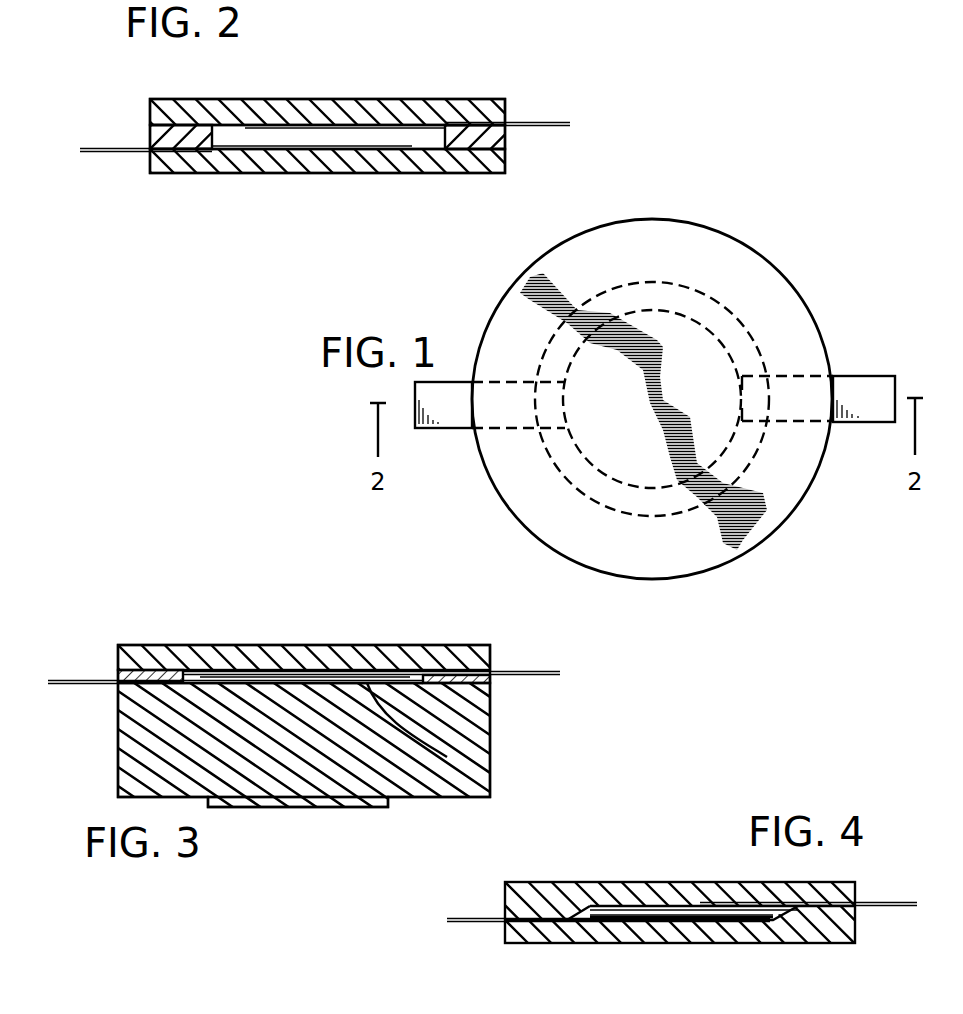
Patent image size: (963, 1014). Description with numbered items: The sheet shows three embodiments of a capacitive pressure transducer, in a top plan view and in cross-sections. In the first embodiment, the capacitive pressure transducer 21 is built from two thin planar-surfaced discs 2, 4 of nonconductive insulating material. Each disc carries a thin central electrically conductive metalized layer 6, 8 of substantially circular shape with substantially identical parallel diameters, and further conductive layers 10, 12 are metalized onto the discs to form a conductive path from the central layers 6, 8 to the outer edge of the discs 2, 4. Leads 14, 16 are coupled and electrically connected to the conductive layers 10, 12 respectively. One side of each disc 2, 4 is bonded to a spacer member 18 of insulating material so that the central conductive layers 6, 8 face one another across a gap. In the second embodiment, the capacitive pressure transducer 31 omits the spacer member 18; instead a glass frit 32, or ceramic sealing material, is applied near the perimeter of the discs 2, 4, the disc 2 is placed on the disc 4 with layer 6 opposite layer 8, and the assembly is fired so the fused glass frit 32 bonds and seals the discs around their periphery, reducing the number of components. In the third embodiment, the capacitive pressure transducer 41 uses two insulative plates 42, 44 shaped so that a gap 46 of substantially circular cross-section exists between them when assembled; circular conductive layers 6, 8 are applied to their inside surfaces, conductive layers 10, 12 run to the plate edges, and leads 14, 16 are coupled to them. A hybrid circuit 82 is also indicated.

In FIG. 2, the disc 2 is at (306, 98).
In FIG. 1, the disc 2 is at (790, 294).
In FIG. 3, the disc 2 is at (312, 645).
In FIG. 2, the disc 4 is at (321, 174).
In FIG. 3, the disc 4 is at (410, 798).
In FIG. 2, the central electrically conductive metalized layer 6 is at (352, 99).
In FIG. 1, the central electrically conductive metalized layer 6 is at (615, 490).
In FIG. 3, the central electrically conductive metalized layer 6 is at (365, 671).
In FIG. 4, the central electrically conductive metalized layer 6 is at (700, 883).
In FIG. 2, the central electrically conductive metalized layer 8 is at (373, 150).
In FIG. 3, the central electrically conductive metalized layer 8 is at (447, 757).
In FIG. 4, the central electrically conductive metalized layer 8 is at (630, 943).
In FIG. 2, the conductive layer 10 is at (474, 98).
In FIG. 1, the conductive layer 10 is at (800, 375).
In FIG. 3, the conductive layer 10 is at (455, 645).
In FIG. 4, the conductive layer 10 is at (815, 943).
In FIG. 2, the conductive layer 12 is at (186, 152).
In FIG. 1, the conductive layer 12 is at (503, 428).
In FIG. 3, the conductive layer 12 is at (160, 686).
In FIG. 4, the conductive layer 12 is at (538, 943).
In FIG. 2, the lead 14 is at (549, 122).
In FIG. 1, the lead 14 is at (868, 385).
In FIG. 3, the lead 14 is at (556, 672).
In FIG. 4, the lead 14 is at (895, 902).
In FIG. 2, the lead 16 is at (98, 148).
In FIG. 1, the lead 16 is at (455, 426).
In FIG. 3, the lead 16 is at (57, 681).
In FIG. 4, the lead 16 is at (463, 918).
In FIG. 2, the spacer member 18 is at (506, 137).
In FIG. 1, the spacer member 18 is at (800, 510).
In FIG. 2, the capacitive pressure transducer 21 is at (438, 56).
In FIG. 1, the capacitive pressure transducer 21 is at (753, 232).
In FIG. 3, the capacitive pressure transducer 31 is at (246, 610).
In FIG. 3, the glass frit 32 is at (118, 672).
In FIG. 4, the capacitive pressure transducer 41 is at (670, 815).
In FIG. 4, the plate 42 is at (626, 882).
In FIG. 4, the plate 44 is at (760, 943).
In FIG. 4, the gap 46 is at (678, 921).
In FIG. 3, the hybrid circuit 82 is at (290, 808).